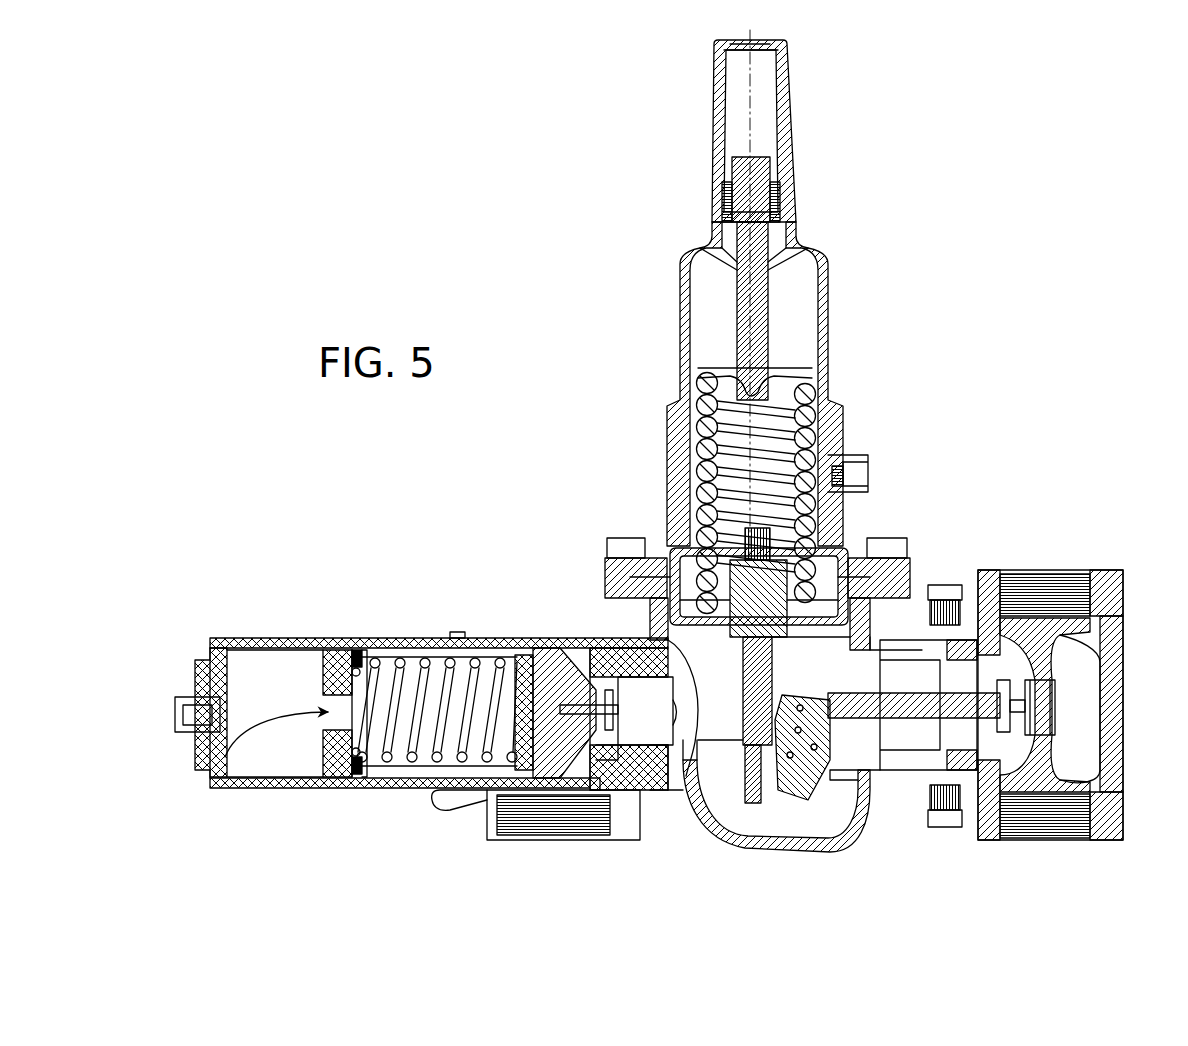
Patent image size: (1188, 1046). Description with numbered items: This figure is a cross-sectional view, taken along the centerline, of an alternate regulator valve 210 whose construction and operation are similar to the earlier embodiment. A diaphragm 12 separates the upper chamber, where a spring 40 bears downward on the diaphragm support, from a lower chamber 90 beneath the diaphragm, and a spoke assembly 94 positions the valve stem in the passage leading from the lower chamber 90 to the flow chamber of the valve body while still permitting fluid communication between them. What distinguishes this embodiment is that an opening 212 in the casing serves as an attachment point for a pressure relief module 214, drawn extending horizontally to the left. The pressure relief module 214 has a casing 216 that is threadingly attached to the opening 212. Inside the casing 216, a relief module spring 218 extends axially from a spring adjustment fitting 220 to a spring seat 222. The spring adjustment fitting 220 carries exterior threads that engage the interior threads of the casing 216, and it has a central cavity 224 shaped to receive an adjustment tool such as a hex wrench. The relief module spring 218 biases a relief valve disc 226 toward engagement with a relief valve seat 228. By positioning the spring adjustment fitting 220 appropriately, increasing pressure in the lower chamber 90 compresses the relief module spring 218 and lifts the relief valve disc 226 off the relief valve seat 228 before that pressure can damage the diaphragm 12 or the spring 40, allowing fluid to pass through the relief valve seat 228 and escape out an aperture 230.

The regulator valve 210 is at (757, 387).
The spring 40 is at (800, 384).
The diaphragm 12 is at (812, 628).
The spoke assembly 94 is at (977, 672).
The pressure relief module 214 is at (318, 617).
The casing 216 is at (455, 636).
The spring seat 222 is at (560, 680).
The central cavity 224 is at (213, 770).
The spring adjustment fitting 220 is at (336, 787).
The relief module spring 218 is at (386, 788).
The aperture 230 is at (559, 844).
The relief valve seat 228 is at (605, 782).
The relief valve disc 226 is at (662, 764).
The opening 212 is at (680, 693).
The lower chamber 90 is at (731, 679).